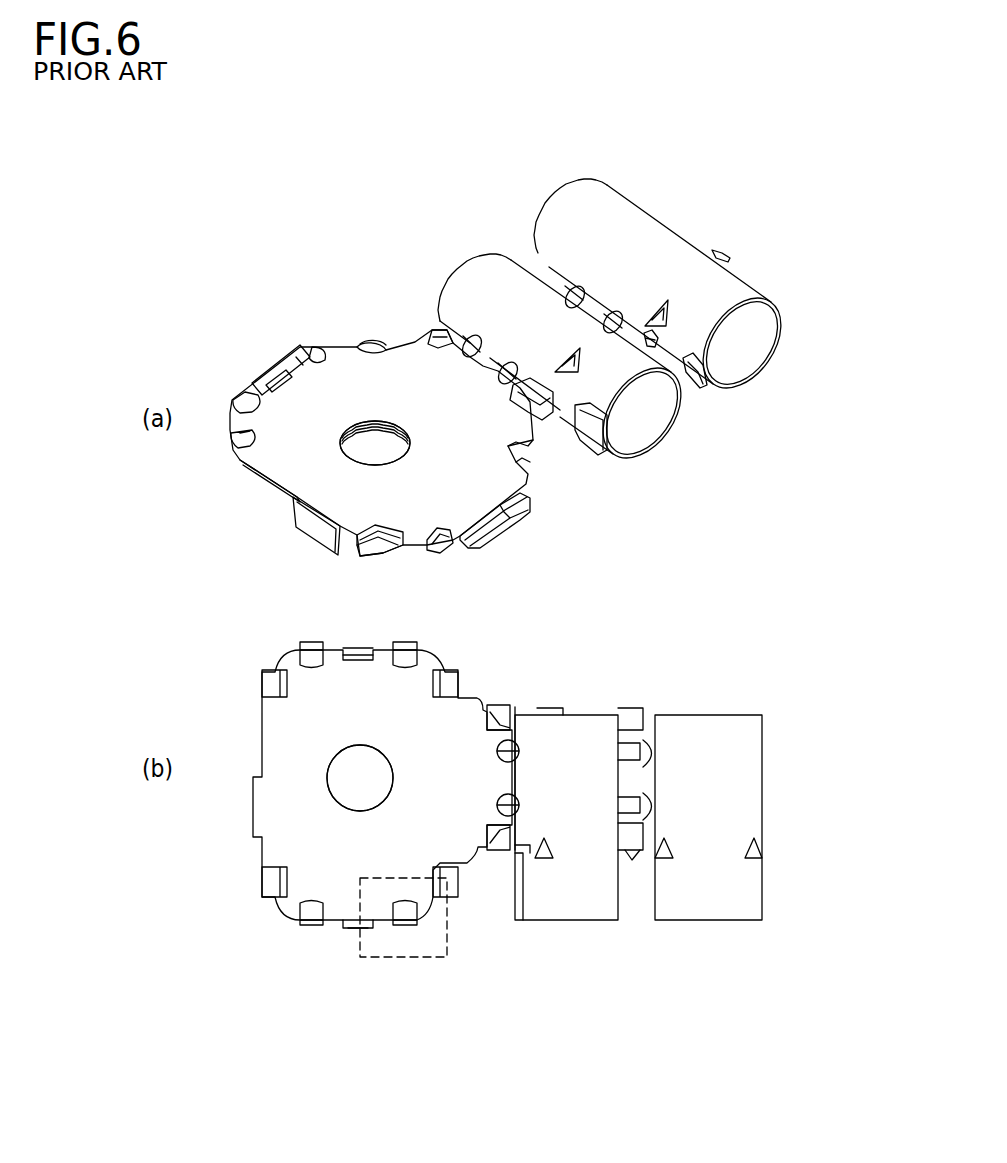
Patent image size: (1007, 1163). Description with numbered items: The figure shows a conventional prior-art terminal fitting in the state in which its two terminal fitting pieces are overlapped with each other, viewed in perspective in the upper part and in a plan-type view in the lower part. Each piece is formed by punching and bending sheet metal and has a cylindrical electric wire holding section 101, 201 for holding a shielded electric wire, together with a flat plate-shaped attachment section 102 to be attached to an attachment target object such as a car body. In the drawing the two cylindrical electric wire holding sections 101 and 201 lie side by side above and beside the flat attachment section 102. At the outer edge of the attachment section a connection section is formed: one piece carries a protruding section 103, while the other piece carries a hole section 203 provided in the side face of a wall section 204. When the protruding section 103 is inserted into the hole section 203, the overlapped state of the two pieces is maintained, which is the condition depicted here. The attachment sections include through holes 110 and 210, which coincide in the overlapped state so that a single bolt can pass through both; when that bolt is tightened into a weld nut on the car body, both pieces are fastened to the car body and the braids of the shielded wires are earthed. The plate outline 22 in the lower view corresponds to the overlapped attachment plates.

In FIG. 6a, the electric wire holding section 101 is at (700, 277).
In FIG. 6b, the electric wire holding section 101 is at (737, 730).
In FIG. 6a, the electric wire holding section 201 is at (492, 295).
In FIG. 6b, the electric wire holding section 201 is at (583, 730).
In FIG. 6a, the attachment section 102 is at (381, 442).
In FIG. 6a, the protruding section 103 is at (495, 526).
In FIG. 6a, the hole section 203 is at (488, 533).
In FIG. 6a, the wall section 204 is at (460, 549).
In FIG. 6a, the through hole 110 is at (370, 455).
In FIG. 6b, the through hole 110 is at (340, 622).
In FIG. 6a, the through hole 210 is at (375, 443).
In FIG. 6b, the through hole 210 is at (360, 778).
In FIG. 6b, the plate body 22 is at (369, 789).